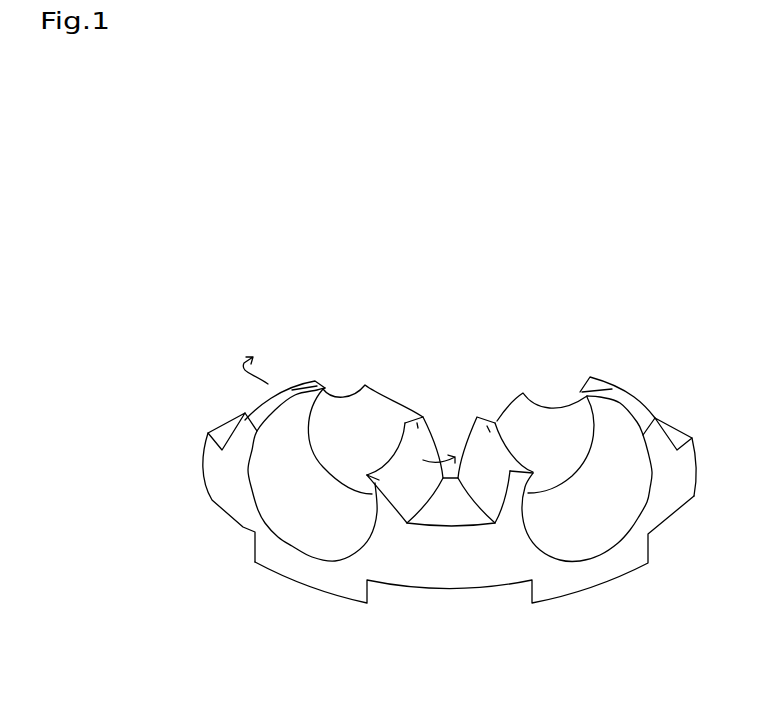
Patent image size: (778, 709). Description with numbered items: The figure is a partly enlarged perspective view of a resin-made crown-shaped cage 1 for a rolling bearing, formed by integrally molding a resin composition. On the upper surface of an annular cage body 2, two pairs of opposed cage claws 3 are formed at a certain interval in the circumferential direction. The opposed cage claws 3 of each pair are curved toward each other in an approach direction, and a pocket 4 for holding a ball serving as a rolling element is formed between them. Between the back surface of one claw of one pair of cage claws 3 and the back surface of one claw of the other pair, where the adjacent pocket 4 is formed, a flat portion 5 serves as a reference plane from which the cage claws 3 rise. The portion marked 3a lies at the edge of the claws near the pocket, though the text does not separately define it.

The resin-made crown-shaped cage 1 is at (498, 347).
The annular cage body 2 is at (210, 483).
The cage claws 3 is at (451, 426).
The pocket lip / edge portion 3a is at (373, 482).
The pocket 4 is at (283, 516).
The flat portion 5 is at (448, 516).